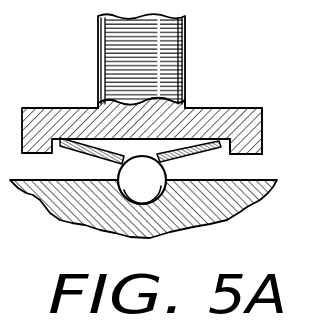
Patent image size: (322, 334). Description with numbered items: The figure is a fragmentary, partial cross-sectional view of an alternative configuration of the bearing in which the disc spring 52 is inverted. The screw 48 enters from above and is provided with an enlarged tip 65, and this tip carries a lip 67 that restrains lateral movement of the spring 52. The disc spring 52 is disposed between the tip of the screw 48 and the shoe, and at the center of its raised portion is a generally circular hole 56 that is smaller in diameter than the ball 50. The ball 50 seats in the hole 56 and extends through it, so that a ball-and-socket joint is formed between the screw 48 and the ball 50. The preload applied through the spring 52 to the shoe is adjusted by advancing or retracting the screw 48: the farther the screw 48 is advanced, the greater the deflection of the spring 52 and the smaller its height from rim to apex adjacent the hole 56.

The screw 48 is at (188, 74).
The enlarged tip 65 is at (204, 108).
The lip 67 is at (263, 133).
The ball 50 is at (112, 171).
The disc spring 52 is at (195, 158).
The hole 56 is at (166, 158).